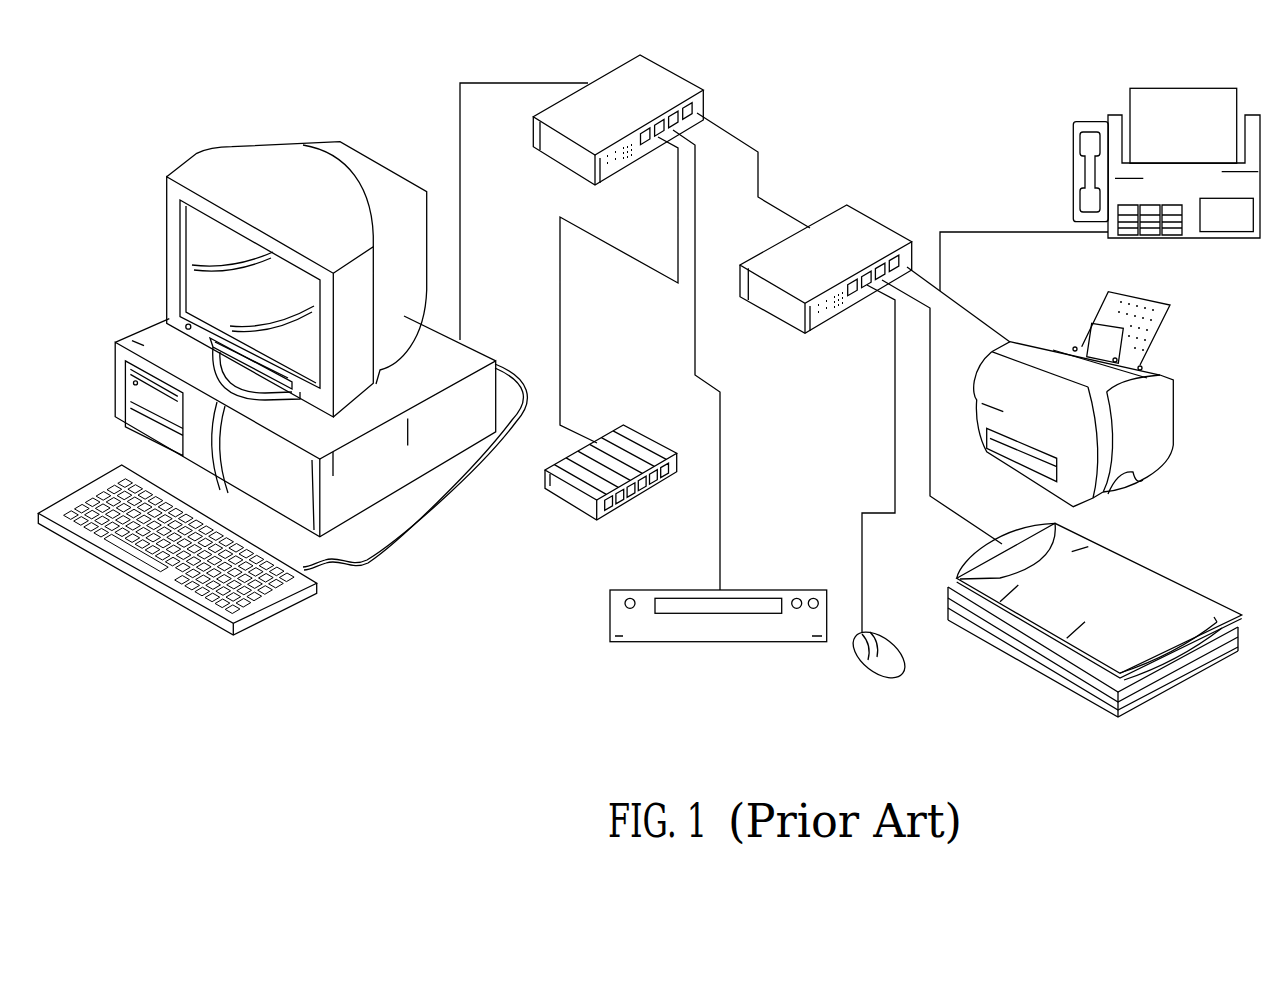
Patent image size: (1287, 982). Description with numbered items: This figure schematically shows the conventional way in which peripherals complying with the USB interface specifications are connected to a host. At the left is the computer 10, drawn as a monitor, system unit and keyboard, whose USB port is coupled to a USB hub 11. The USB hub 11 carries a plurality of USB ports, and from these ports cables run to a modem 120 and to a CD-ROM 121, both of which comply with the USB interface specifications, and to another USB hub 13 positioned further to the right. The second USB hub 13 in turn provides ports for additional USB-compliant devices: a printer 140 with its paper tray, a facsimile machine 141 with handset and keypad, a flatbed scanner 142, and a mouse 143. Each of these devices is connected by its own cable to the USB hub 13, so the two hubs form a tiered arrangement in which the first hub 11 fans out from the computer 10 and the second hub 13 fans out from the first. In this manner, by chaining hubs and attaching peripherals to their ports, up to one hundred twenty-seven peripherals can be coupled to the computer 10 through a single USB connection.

The computer 10 is at (157, 335).
The USB hub 11 is at (657, 95).
The USB hub 13 is at (867, 240).
The modem 120 is at (562, 497).
The CD-ROM 121 is at (738, 625).
The printer 140 is at (1153, 422).
The facsimile machine 141 is at (1152, 108).
The scanner 142 is at (1140, 600).
The mouse 143 is at (896, 659).